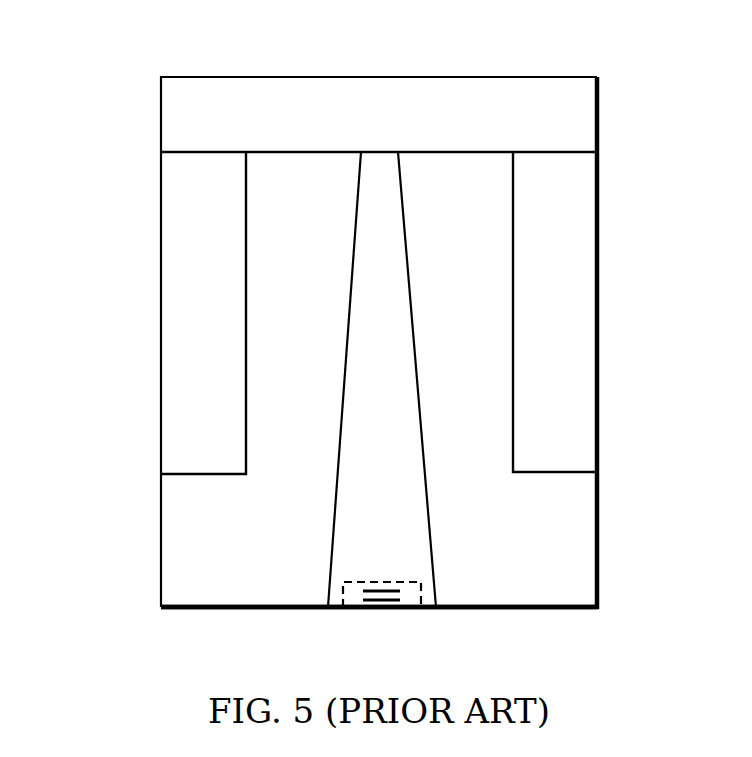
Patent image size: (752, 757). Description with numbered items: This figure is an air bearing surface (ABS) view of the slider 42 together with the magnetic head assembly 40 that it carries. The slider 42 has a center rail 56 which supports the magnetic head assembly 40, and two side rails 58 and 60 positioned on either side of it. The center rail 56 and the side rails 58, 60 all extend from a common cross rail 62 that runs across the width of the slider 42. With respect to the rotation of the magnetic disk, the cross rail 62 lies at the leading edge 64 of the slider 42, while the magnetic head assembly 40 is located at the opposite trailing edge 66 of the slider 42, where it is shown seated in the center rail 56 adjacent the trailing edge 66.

The slider 42 is at (150, 555).
The magnetic head assembly 40 is at (346, 612).
The center rail 56 is at (365, 260).
The side rail 58 is at (175, 222).
The side rail 60 is at (570, 220).
The cross rail 62 is at (291, 78).
The leading edge 64 is at (445, 76).
The trailing edge 66 is at (497, 610).